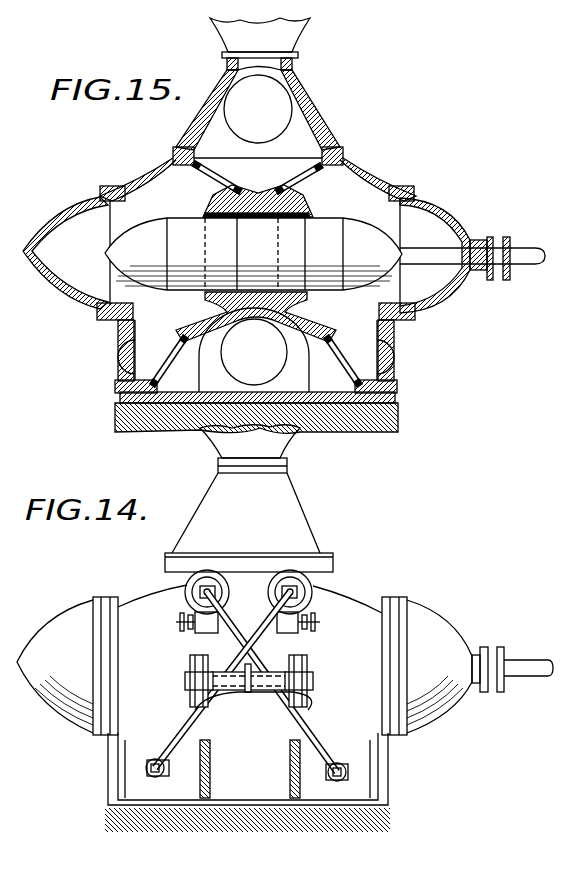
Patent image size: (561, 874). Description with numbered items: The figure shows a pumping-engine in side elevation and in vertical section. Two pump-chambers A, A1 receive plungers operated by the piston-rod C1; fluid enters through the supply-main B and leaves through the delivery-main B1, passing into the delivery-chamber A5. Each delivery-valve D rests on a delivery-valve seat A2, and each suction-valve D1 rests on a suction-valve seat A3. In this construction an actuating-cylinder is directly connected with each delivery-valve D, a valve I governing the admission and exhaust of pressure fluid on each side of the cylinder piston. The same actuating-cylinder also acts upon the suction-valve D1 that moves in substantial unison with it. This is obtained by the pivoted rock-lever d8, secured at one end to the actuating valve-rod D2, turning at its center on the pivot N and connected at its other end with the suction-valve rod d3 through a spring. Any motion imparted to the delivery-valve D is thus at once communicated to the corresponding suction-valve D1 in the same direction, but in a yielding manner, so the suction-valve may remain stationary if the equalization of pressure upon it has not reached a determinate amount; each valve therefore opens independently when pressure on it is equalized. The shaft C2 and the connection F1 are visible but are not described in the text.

In FIG. 15, the pump-chamber A is at (283, 315).
In FIG. 15, the pump-chamber A1 is at (66, 253).
In FIG. 15, the delivery-valve seat A2 is at (250, 201).
In FIG. 15, the suction-valve seat A3 is at (254, 339).
In FIG. 15, the delivery-chamber A5 is at (317, 129).
In FIG. 15, the supply-main B is at (254, 350).
In FIG. 15, the delivery-main B1 is at (258, 109).
In FIG. 15, the piston-rod C1 is at (253, 254).
In FIG. 14, the piston-rod C1 is at (527, 668).
In FIG. 15, the shaft C2 is at (527, 262).
In FIG. 15, the delivery-valve D is at (288, 178).
In FIG. 15, the suction-valve D1 is at (170, 352).
In FIG. 14, the actuating valve-rod D2 is at (207, 592).
In FIG. 14, the connecting curve F1 is at (165, 584).
In FIG. 14, the valve I is at (177, 622).
In FIG. 14, the pivot N is at (311, 682).
In FIG. 14, the suction-valve rod d3 is at (155, 759).
In FIG. 14, the rock-lever d8 is at (196, 727).